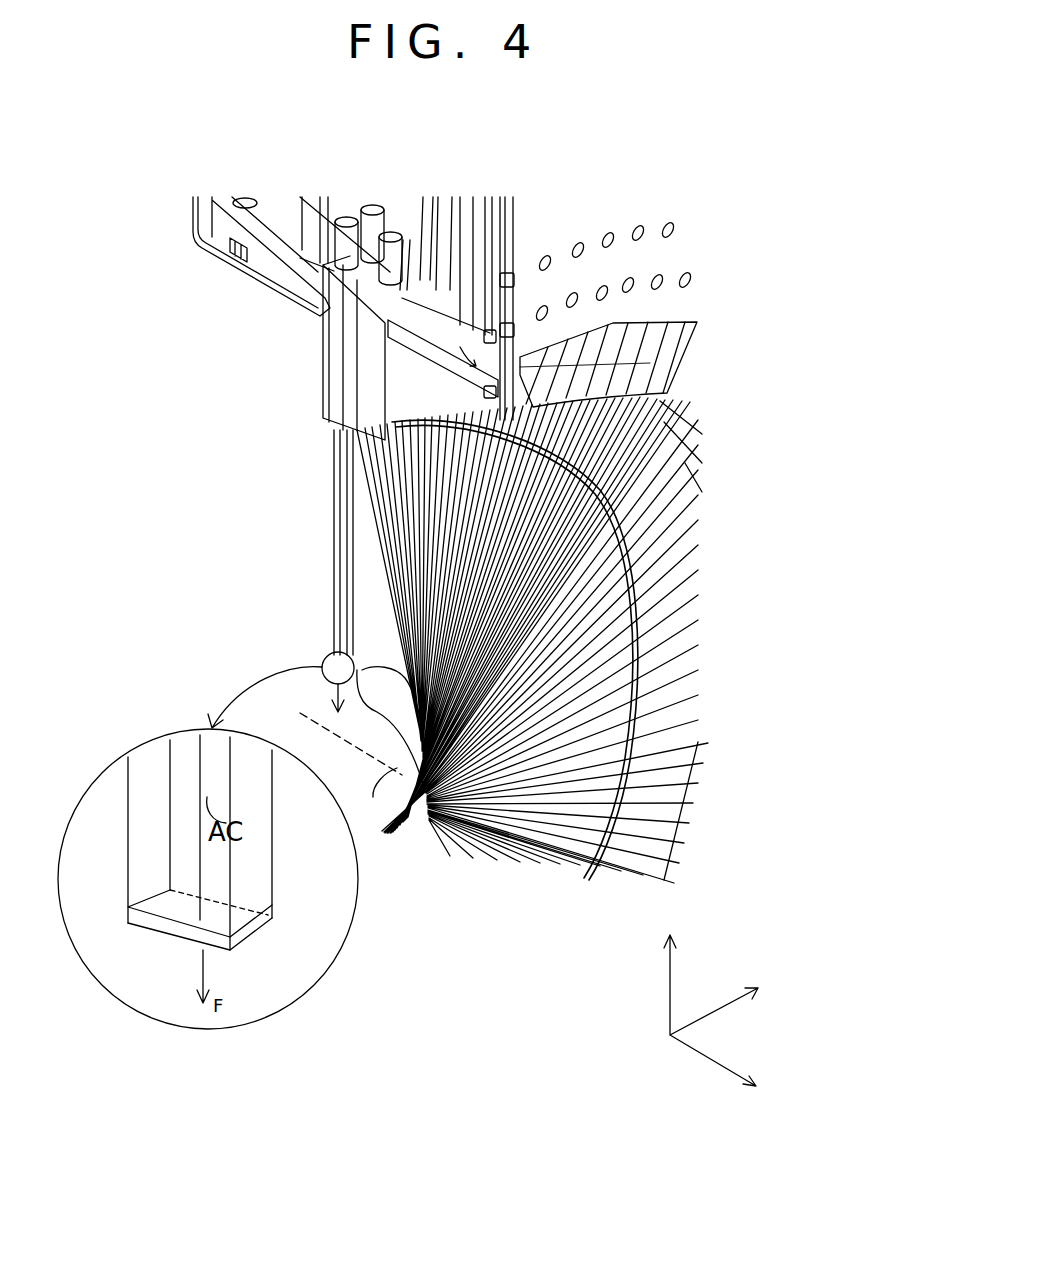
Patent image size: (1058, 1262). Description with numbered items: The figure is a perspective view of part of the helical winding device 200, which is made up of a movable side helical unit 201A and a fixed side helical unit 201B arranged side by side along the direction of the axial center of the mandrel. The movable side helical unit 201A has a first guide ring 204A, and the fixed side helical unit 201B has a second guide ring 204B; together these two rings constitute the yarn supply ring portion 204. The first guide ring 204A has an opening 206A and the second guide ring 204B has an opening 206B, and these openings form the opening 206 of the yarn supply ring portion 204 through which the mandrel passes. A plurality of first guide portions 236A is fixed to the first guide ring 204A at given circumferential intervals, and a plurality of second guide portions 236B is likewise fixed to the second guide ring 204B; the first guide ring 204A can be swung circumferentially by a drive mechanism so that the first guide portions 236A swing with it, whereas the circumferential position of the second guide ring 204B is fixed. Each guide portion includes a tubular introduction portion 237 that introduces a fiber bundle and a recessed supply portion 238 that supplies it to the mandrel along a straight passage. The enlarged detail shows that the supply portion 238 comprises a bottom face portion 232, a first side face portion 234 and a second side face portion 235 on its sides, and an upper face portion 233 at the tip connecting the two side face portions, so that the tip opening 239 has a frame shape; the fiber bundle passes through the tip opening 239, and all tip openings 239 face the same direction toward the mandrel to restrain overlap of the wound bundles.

The helical winding device 200 is at (733, 156).
The movable side helical unit 201A is at (99, 190).
The fixed side helical unit 201B is at (786, 228).
The yarn supply ring portion 204 is at (249, 241).
The first guide ring 204A is at (193, 220).
The second guide ring 204B is at (676, 259).
The opening 206 is at (463, 787).
The opening 206A is at (498, 613).
The opening 206B is at (545, 640).
The bottom face portion 232 is at (180, 797).
The upper face portion 233 is at (170, 923).
The first side face portion 234 is at (145, 862).
The second side face portion 235 is at (255, 848).
The first guide portion 236A is at (220, 260).
The second guide portion 236B is at (650, 363).
The introduction portion 237 is at (330, 327).
The supply portion 238 is at (332, 550).
The tip opening 239 is at (217, 903).